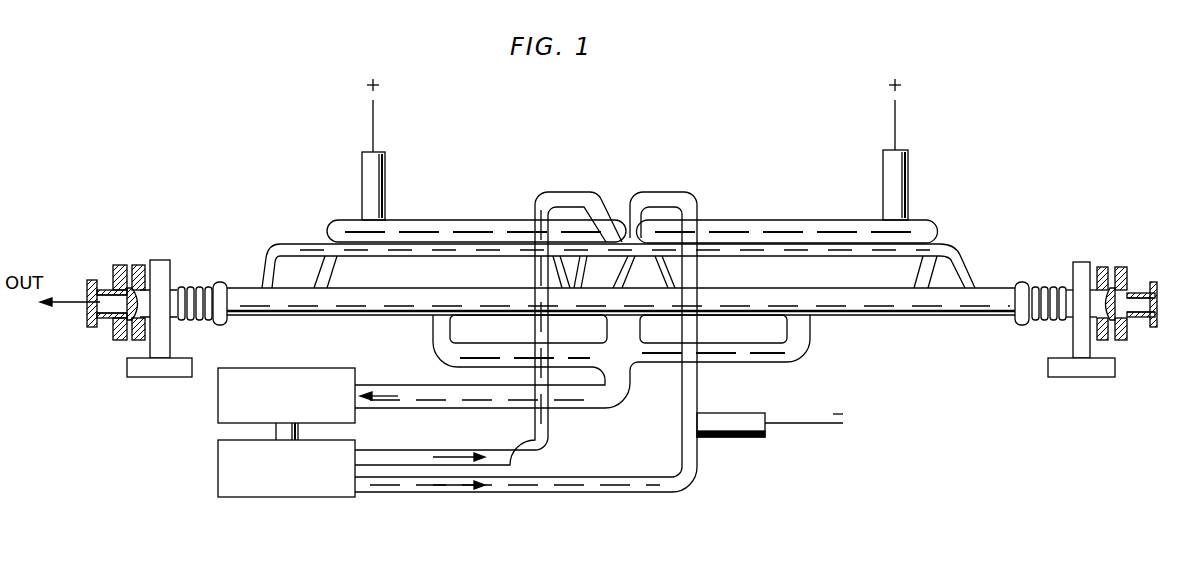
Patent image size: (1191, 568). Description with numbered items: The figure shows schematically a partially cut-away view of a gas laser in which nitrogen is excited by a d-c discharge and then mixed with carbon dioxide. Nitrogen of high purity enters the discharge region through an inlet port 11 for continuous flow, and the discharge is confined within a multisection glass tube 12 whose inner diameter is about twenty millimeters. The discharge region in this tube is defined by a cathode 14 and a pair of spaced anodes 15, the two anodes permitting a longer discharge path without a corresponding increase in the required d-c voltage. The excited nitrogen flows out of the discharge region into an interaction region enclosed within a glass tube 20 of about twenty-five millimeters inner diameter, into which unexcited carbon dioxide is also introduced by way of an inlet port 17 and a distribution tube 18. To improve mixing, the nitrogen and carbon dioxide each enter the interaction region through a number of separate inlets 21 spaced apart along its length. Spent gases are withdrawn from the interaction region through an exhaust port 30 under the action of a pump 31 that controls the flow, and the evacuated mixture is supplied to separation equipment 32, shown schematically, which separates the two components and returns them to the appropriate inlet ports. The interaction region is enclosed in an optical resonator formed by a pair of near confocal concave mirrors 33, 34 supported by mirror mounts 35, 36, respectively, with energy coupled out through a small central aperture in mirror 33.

The inlet port 11 is at (385, 488).
The multisection glass tube 12 is at (470, 220).
The cathode 14 is at (727, 437).
The anodes 15 is at (385, 166).
The inlet port 17 is at (547, 432).
The distribution tube 18 is at (298, 243).
The glass tube 20 is at (866, 306).
The inlets 21 is at (320, 272).
The exhaust port 30 is at (395, 383).
The pump 31 is at (282, 368).
The separation equipment 32 is at (261, 500).
The concave mirror 33 is at (140, 265).
The concave mirror 34 is at (1109, 267).
The mirror mount 35 is at (120, 265).
The mirror mount 36 is at (1127, 273).